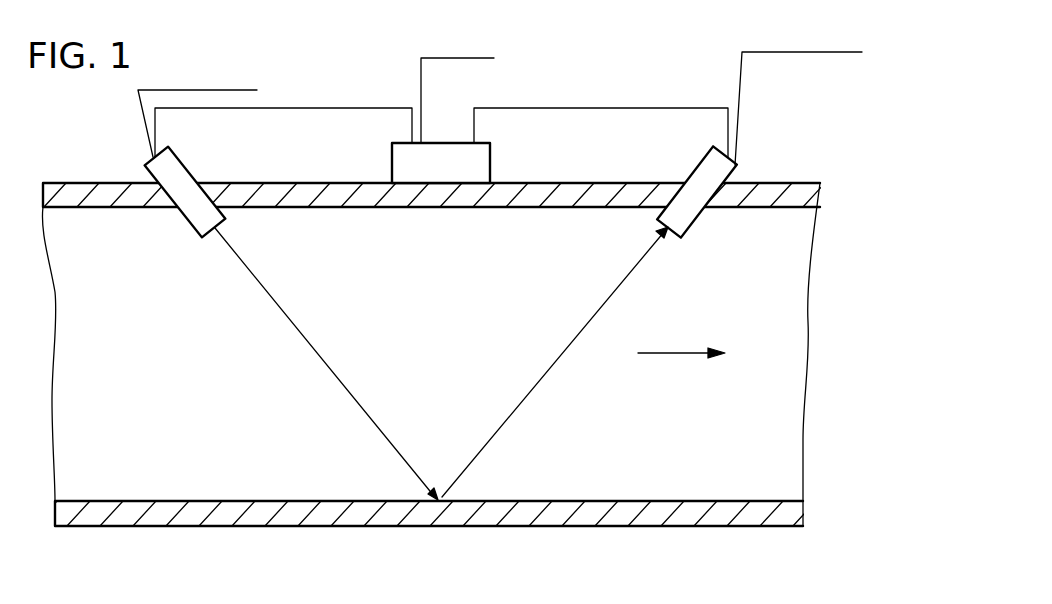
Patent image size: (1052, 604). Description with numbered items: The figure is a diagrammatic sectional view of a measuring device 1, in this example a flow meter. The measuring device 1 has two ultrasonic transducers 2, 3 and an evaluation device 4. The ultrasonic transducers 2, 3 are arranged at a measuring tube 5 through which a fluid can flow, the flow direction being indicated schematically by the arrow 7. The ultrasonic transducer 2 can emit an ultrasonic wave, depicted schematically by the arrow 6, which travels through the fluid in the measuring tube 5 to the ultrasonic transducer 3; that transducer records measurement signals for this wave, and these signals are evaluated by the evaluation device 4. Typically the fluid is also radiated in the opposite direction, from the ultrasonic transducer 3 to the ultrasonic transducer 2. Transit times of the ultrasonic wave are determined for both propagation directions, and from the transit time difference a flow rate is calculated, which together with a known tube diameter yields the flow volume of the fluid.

The measuring device 1 is at (800, 131).
The ultrasonic transducer 2 is at (150, 163).
The ultrasonic transducer 3 is at (701, 160).
The evaluation device 4 is at (432, 143).
The measuring tube 5 is at (393, 527).
The arrow 6 is at (323, 362).
The arrow 7 is at (680, 352).